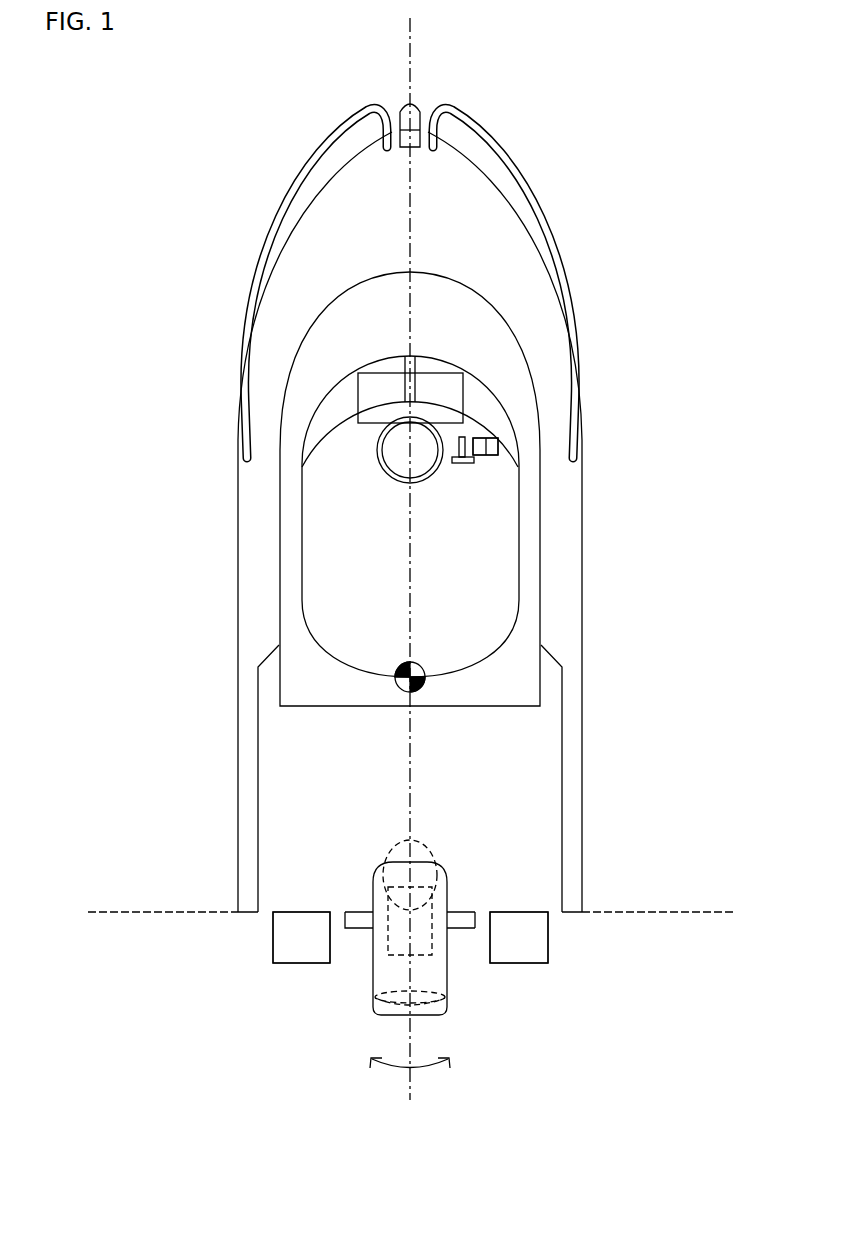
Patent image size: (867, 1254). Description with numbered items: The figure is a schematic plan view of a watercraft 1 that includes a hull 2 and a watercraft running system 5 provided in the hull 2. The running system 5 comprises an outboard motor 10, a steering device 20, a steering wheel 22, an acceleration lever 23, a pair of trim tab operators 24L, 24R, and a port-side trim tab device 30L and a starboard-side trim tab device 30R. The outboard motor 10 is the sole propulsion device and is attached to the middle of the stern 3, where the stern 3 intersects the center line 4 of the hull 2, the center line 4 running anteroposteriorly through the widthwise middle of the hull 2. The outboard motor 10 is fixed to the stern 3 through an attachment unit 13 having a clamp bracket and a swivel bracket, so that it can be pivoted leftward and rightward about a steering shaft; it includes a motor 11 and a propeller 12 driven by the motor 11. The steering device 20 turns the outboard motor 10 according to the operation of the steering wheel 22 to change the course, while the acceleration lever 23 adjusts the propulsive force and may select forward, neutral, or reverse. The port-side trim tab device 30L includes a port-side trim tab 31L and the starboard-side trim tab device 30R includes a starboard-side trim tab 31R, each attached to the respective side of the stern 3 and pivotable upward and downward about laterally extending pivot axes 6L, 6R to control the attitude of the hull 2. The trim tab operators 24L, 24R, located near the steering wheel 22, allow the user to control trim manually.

The watercraft 1 is at (303, 120).
The hull 2 is at (234, 565).
The stern 3 is at (337, 915).
The center line 4 is at (411, 42).
The watercraft running system 5 is at (600, 1000).
The pivot axis 6L is at (143, 913).
The pivot axis 6R is at (677, 913).
The outboard motor 10 is at (428, 1016).
The motor 11 is at (420, 958).
The propeller 12 is at (383, 1007).
The attachment unit 13 is at (360, 914).
The steering device 20 is at (422, 843).
The steering wheel 22 is at (386, 472).
The acceleration lever 23 is at (456, 466).
The trim tab operator 24L is at (487, 458).
The trim tab operator 24R is at (497, 456).
The port-side trim tab device 30L is at (290, 972).
The starboard-side trim tab device 30R is at (530, 972).
The port-side trim tab 31L is at (272, 944).
The starboard-side trim tab 31R is at (549, 944).